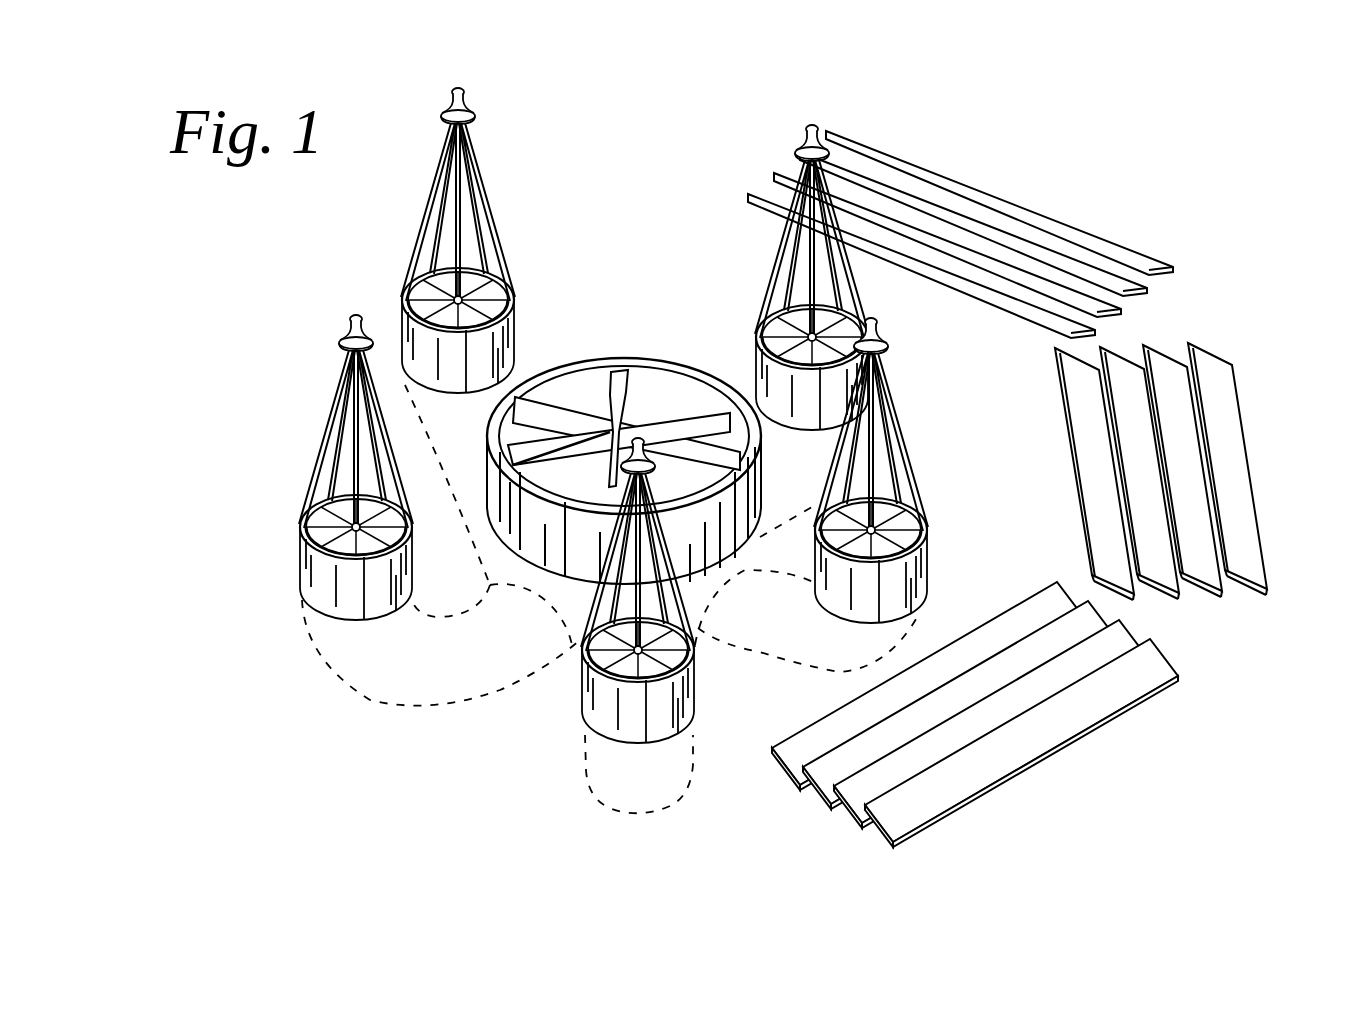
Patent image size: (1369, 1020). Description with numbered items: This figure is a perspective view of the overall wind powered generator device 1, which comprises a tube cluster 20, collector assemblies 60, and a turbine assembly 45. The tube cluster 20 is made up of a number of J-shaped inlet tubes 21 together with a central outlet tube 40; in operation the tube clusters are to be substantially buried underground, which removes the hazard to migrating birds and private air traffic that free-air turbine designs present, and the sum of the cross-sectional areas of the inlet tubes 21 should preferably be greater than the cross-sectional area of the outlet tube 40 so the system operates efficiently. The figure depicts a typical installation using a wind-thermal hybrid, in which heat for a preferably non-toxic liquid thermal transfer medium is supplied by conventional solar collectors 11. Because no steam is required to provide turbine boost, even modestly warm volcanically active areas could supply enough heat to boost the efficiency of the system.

The wind powered generator device 1 is at (643, 170).
The solar collectors 11 is at (1238, 391).
The tube cluster 20 is at (710, 656).
The J-shaped inlet tubes 21 is at (370, 698).
The central outlet tube 40 is at (567, 643).
The turbine assembly 45 is at (591, 420).
The collector assemblies 60 is at (315, 394).